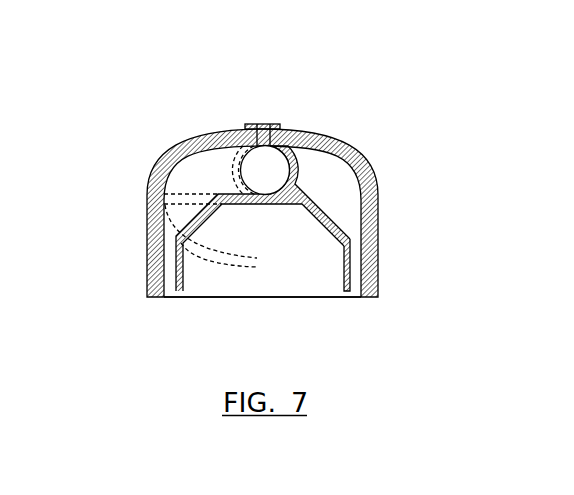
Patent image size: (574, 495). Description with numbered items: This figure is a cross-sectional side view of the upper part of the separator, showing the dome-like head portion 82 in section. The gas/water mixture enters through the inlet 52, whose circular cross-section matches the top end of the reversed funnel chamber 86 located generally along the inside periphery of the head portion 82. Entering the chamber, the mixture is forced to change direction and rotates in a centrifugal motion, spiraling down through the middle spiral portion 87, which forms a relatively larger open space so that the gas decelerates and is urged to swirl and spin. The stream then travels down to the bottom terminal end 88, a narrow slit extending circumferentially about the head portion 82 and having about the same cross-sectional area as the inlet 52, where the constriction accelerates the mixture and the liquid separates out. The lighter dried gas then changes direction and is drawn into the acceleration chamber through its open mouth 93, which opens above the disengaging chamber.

The head portion 82 is at (390, 202).
The inlet 52 is at (275, 156).
The funnel chamber 86 is at (204, 153).
The middle spiral portion 87 is at (330, 160).
The terminal end 88 is at (359, 305).
The open mouth 93 is at (235, 293).